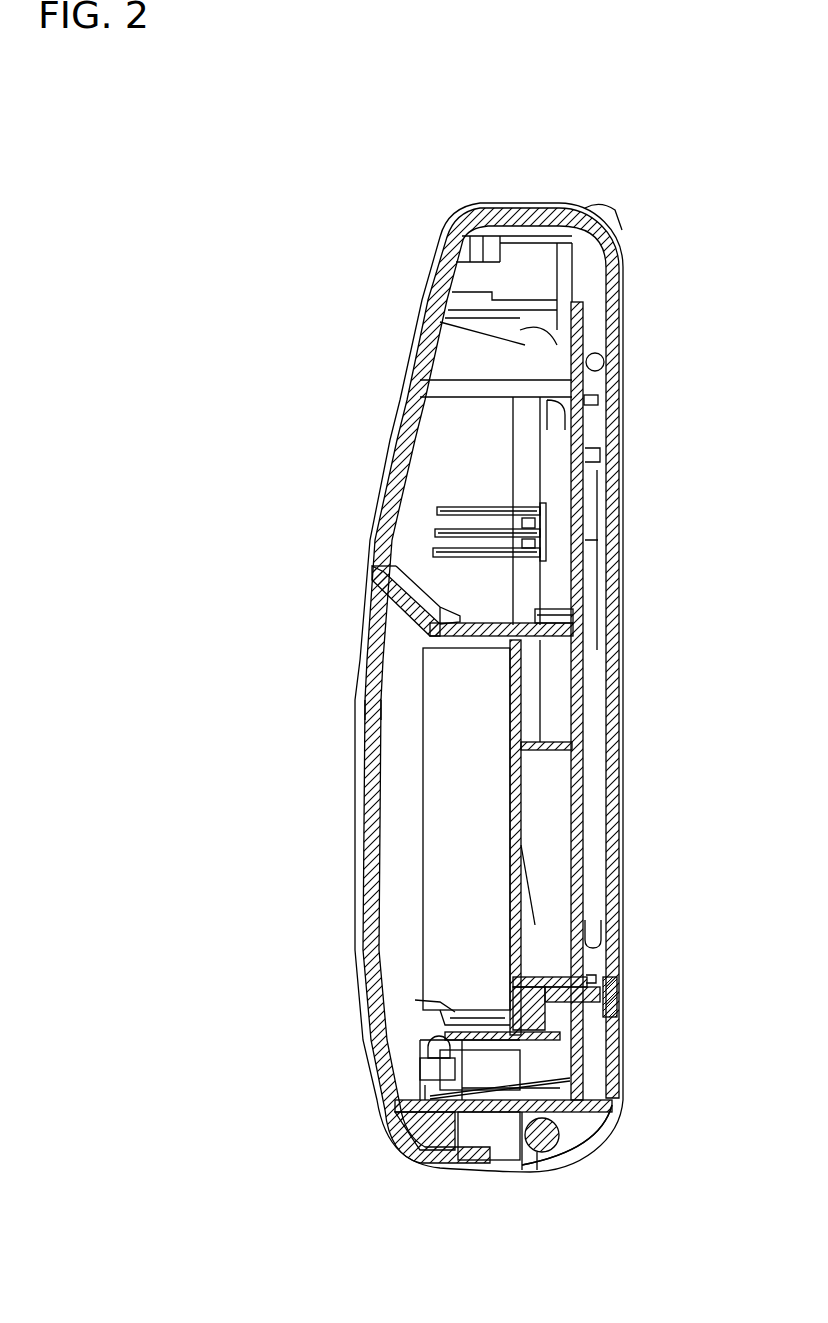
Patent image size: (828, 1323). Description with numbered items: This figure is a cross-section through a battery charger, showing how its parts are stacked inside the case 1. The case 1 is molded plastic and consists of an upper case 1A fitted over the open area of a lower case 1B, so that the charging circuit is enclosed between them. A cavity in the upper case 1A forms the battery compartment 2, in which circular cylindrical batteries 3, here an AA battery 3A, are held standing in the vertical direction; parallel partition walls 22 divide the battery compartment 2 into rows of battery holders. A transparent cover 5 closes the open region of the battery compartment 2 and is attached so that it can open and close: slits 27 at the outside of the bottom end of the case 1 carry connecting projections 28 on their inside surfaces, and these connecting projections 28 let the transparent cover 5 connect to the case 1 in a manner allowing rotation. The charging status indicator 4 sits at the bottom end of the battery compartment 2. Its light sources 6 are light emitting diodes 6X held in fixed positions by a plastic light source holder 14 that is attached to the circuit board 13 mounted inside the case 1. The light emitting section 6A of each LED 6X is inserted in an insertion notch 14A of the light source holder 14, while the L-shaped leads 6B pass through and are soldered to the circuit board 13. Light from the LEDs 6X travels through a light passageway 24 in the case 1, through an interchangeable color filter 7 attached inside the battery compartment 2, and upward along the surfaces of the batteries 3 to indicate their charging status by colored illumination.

The case 1 is at (436, 687).
The upper case 1A is at (420, 340).
The lower case 1B is at (414, 436).
The battery compartment 2 is at (396, 680).
The circular cylindrical battery 3 is at (366, 829).
The AA battery 3A is at (435, 790).
The charging status indicator 4 is at (367, 1065).
The transparent cover 5 is at (372, 718).
The light source 6 is at (391, 1081).
The light emitting diode 6X is at (391, 1079).
The light emitting section 6A is at (440, 1052).
The lead 6B is at (440, 1095).
The interchangeable color filter 7 is at (415, 1012).
The circuit board 13 is at (588, 545).
The light source holder 14 is at (470, 1018).
The insertion notch 14A is at (450, 1028).
The partition wall 22 is at (512, 828).
The light passageway 24 is at (405, 1000).
The slit 27 is at (577, 1130).
The connecting projection 28 is at (546, 1155).